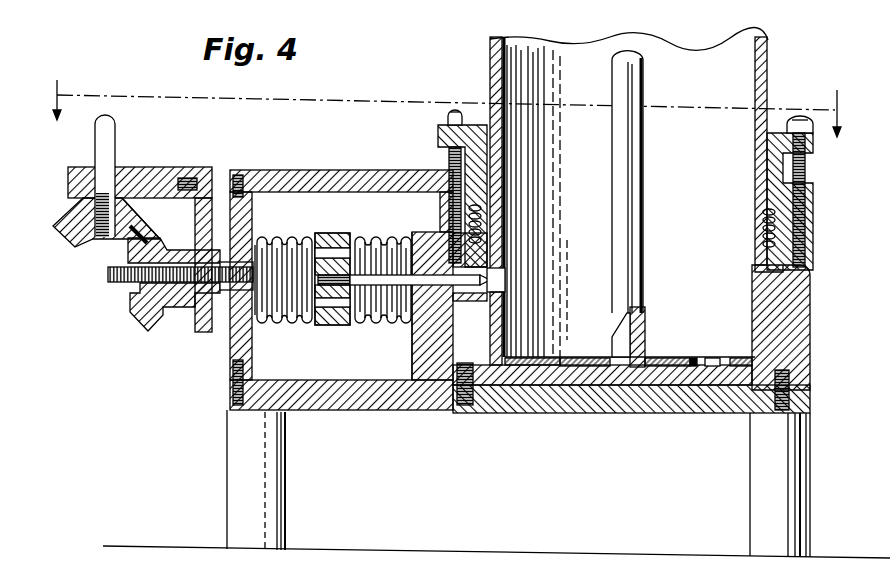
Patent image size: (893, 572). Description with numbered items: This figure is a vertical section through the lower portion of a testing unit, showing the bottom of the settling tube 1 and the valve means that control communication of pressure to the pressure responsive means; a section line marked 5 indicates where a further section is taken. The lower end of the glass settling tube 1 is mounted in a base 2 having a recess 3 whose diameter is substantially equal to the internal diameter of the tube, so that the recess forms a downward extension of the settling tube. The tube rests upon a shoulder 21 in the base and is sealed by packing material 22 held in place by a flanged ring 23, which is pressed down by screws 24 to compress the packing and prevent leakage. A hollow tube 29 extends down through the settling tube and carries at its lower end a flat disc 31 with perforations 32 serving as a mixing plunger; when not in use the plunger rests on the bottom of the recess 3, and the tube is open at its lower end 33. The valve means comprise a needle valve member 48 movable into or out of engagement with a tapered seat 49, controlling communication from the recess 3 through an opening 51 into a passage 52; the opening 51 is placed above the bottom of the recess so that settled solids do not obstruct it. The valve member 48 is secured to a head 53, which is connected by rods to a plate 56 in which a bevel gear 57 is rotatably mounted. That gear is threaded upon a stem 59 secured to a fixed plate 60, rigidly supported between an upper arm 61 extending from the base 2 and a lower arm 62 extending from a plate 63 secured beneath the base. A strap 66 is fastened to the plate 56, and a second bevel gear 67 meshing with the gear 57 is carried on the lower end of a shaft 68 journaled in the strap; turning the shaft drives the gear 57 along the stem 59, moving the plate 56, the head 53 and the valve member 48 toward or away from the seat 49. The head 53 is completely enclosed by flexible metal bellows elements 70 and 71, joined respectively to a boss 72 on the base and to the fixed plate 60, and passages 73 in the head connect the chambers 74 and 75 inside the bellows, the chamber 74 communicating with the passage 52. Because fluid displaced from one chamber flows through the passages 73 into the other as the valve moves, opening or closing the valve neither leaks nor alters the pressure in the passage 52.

The settling tube 1 is at (768, 73).
The base 2 is at (795, 328).
The recess 3 is at (748, 296).
The section line 5- 5 is at (433, 108).
The shoulder 21 is at (770, 272).
The packing material 22 is at (773, 220).
The flanged ring 23 is at (770, 165).
The screws 24 is at (448, 158).
The hollow rod or tube 29 is at (643, 288).
The flat disc or plate 31 is at (690, 370).
The perforations 32 is at (715, 367).
The open lower end 33 is at (625, 358).
The needle valve member 48 is at (411, 326).
The tapered seat 49 is at (502, 271).
The opening 51 is at (500, 300).
The passage 52 is at (434, 262).
The head 53 is at (340, 320).
The plate 56 is at (193, 317).
The bevel gear 57 is at (166, 243).
The stem 59 is at (127, 281).
The plate 60 is at (236, 323).
The upper arm 61 is at (285, 172).
The lower arm 62 is at (338, 400).
The plate 63 is at (567, 403).
The strap 66 is at (147, 170).
The second bevel gear 67 is at (72, 213).
The rod or shaft 68 is at (107, 137).
The bellows element 70 is at (375, 323).
The bellows element 71 is at (277, 323).
The boss 72 is at (432, 325).
The passages 73 is at (330, 248).
The chamber 74 is at (372, 258).
The chamber 75 is at (281, 258).